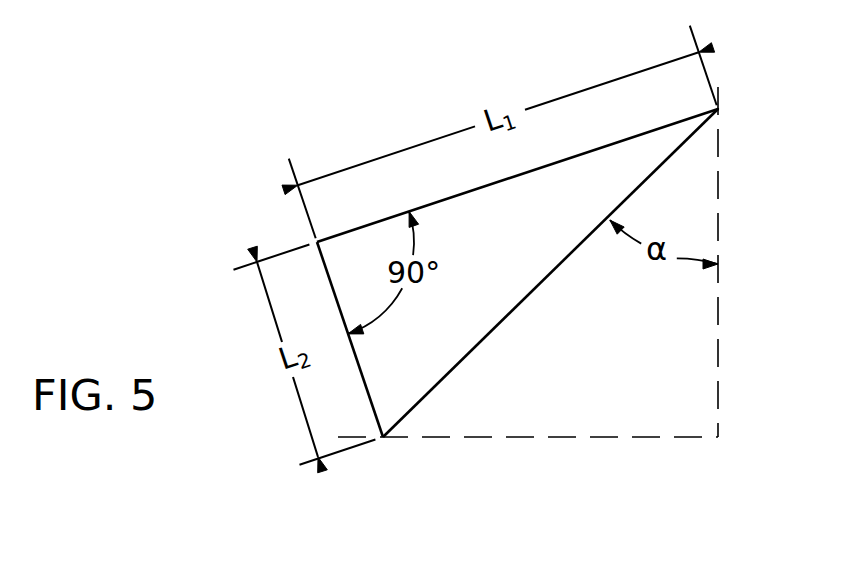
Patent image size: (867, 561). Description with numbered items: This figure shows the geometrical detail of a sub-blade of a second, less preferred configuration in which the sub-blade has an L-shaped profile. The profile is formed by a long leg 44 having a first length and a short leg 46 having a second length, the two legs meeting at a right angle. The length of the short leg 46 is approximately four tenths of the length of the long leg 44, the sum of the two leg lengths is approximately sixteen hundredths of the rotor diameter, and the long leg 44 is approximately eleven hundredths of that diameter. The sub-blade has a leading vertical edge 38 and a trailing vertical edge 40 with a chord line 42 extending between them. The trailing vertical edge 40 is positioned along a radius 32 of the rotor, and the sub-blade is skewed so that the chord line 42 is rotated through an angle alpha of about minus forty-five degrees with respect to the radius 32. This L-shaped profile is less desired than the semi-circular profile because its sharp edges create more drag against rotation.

The radius 32 is at (720, 173).
The leading vertical edge 38 is at (383, 440).
The trailing vertical edge 40 is at (720, 110).
The chord line 42 is at (504, 320).
The long leg 44 is at (477, 190).
The short leg 46 is at (363, 378).